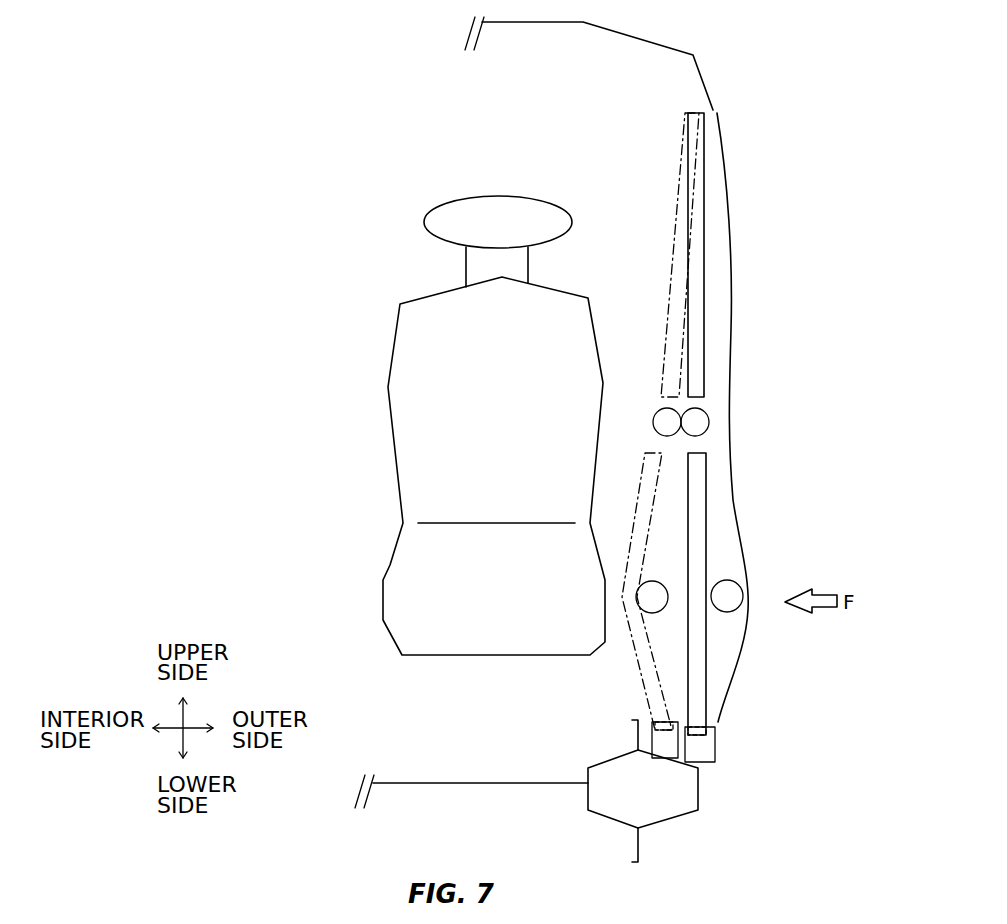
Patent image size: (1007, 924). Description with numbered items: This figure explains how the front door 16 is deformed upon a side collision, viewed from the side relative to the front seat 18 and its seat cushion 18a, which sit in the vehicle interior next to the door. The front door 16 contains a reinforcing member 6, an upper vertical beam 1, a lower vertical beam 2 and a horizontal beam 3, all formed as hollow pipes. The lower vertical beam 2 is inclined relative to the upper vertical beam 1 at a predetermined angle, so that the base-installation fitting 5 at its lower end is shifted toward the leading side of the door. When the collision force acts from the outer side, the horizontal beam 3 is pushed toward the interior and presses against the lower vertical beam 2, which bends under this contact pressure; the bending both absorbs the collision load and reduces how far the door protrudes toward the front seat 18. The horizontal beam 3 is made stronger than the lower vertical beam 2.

The upper vertical beam 1 is at (682, 337).
The lower vertical beam 2 is at (688, 492).
The horizontal beam 3 is at (653, 580).
The base-installation fitting 5 is at (700, 751).
The reinforcing member 6 is at (676, 408).
The front door 16 is at (744, 186).
The front seat 18 is at (428, 227).
The seat cushion 18a is at (391, 565).